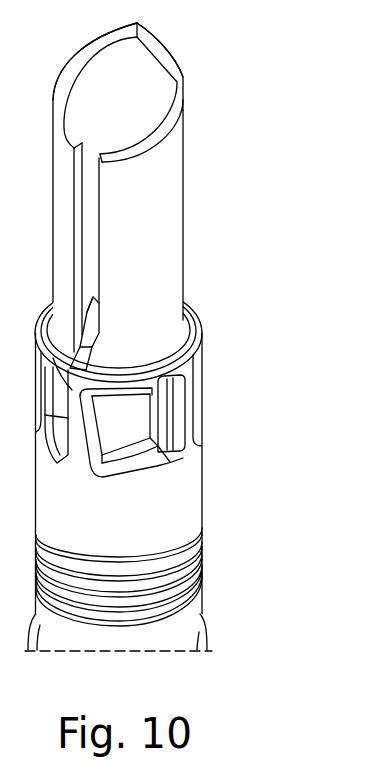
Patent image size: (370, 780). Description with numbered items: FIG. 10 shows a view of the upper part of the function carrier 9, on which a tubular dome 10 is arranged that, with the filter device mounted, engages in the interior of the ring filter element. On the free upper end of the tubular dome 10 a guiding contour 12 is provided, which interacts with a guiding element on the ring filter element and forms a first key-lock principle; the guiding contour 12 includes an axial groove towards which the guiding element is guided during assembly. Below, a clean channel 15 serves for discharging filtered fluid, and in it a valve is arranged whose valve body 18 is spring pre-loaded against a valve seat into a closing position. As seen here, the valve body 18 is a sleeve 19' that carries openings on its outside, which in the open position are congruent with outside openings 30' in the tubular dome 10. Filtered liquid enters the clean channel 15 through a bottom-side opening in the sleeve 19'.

The function carrier 9 is at (205, 170).
The tubular dome 10 is at (167, 235).
The guiding contour 12 is at (175, 45).
The clean channel 15 is at (128, 650).
The valve body 18 is at (128, 412).
The sleeve 19' is at (168, 423).
The outside openings 30' is at (204, 474).